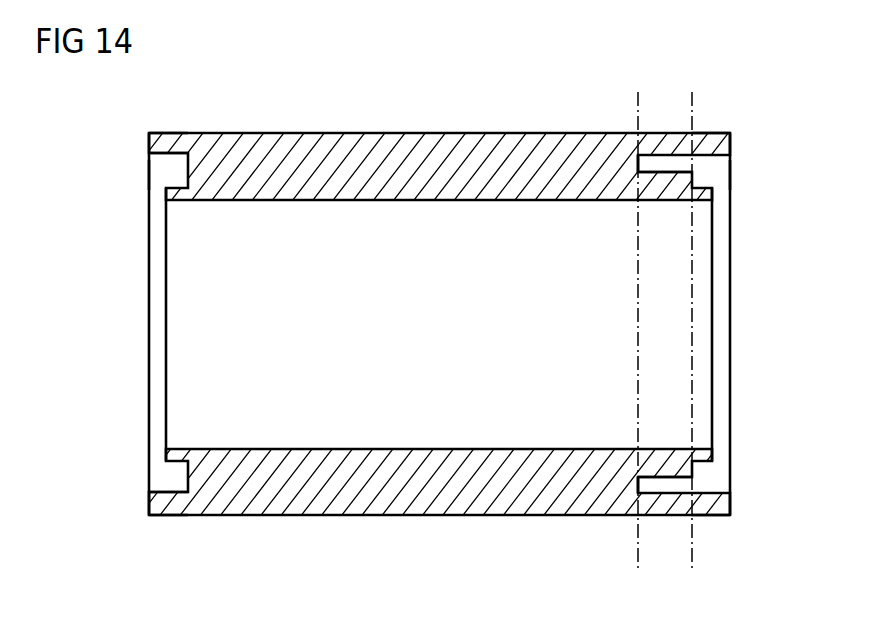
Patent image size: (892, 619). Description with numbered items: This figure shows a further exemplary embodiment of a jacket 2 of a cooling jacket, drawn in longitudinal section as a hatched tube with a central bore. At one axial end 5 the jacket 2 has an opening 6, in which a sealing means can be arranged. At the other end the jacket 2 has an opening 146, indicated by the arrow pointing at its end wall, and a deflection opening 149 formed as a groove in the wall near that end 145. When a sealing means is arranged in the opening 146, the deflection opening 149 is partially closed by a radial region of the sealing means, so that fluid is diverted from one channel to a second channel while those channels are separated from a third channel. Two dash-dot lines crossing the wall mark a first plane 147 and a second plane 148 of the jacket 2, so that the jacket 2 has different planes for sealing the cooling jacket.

The jacket 2 is at (407, 108).
The axial end 5 is at (190, 108).
The opening 6 is at (125, 174).
The second end of the tubular body 145 is at (707, 104).
The opening 146 is at (750, 174).
The first plane 147 is at (636, 562).
The second plane 148 is at (694, 562).
The deflection opening 149 is at (663, 160).